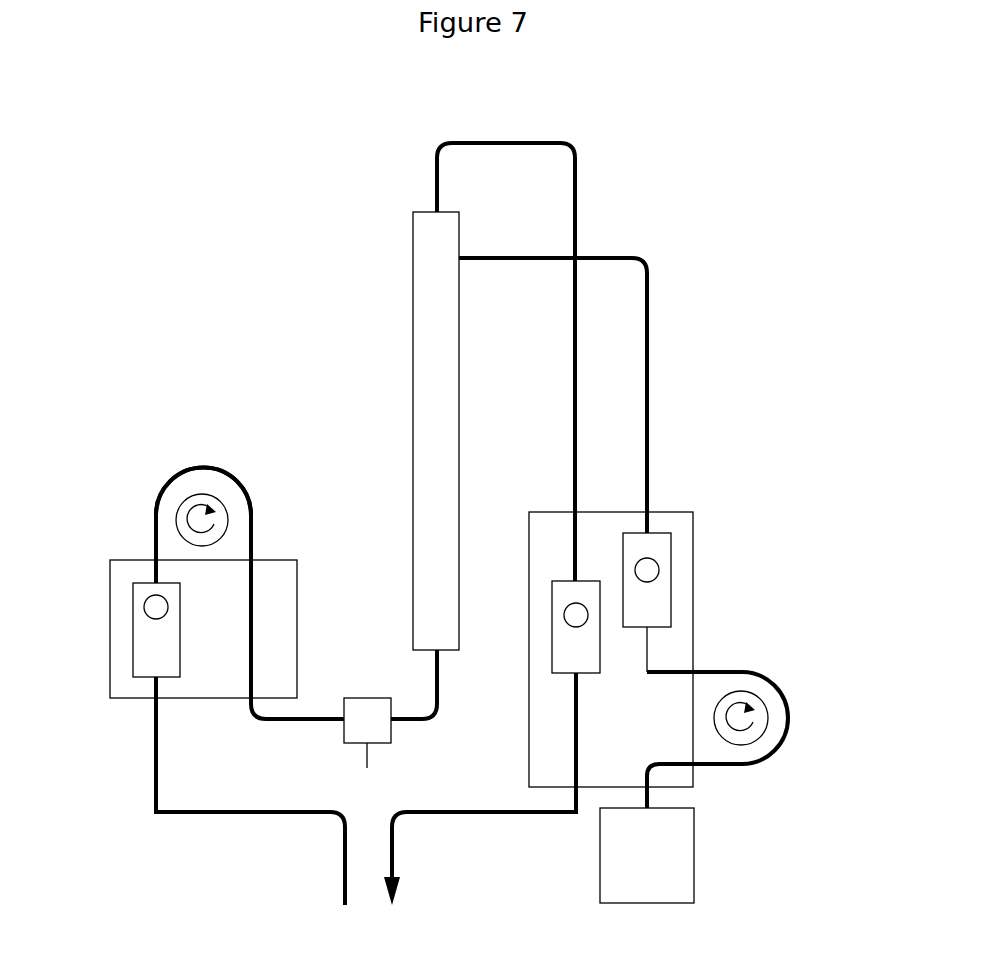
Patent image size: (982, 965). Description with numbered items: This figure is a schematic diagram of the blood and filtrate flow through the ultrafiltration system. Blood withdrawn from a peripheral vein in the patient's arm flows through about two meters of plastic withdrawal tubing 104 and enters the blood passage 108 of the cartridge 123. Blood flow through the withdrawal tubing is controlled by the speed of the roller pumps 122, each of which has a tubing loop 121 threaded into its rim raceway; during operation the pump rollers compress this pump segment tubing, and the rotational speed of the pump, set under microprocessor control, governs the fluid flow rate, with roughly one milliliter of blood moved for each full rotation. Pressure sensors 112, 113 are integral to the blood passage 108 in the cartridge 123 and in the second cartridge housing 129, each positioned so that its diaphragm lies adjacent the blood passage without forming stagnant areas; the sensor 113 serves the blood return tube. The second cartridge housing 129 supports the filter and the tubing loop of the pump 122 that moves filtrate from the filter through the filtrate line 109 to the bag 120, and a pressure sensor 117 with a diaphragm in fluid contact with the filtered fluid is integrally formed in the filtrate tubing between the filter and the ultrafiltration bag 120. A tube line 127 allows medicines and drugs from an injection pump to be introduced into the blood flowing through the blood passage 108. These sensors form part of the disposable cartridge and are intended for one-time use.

The withdrawal tubing 104 is at (338, 874).
The blood passage 108 is at (579, 216).
The conduit 109 is at (650, 318).
The pressure sensor 112 is at (163, 640).
The pressure sensor 113 is at (572, 657).
The pressure sensor 117 is at (661, 553).
The bag 120 is at (647, 860).
The tubing loop 121 is at (190, 482).
The roller pump 122 is at (203, 524).
The cartridge 123 is at (275, 600).
The tube line 127 is at (360, 727).
The second cartridge housing 129 is at (605, 523).